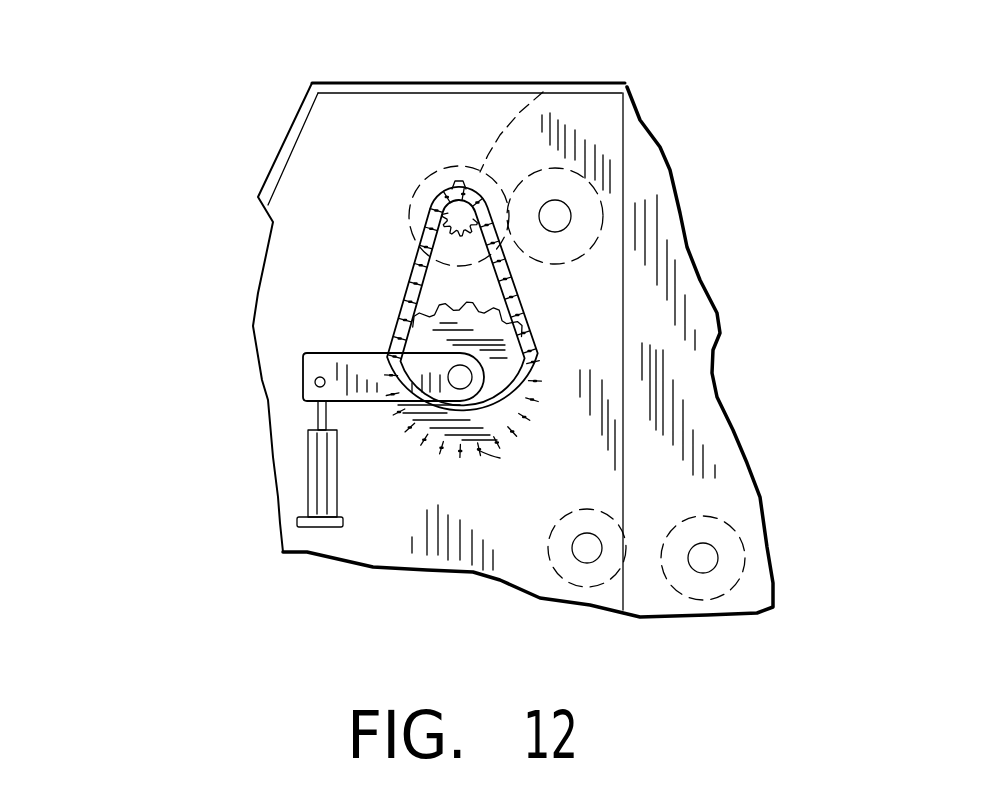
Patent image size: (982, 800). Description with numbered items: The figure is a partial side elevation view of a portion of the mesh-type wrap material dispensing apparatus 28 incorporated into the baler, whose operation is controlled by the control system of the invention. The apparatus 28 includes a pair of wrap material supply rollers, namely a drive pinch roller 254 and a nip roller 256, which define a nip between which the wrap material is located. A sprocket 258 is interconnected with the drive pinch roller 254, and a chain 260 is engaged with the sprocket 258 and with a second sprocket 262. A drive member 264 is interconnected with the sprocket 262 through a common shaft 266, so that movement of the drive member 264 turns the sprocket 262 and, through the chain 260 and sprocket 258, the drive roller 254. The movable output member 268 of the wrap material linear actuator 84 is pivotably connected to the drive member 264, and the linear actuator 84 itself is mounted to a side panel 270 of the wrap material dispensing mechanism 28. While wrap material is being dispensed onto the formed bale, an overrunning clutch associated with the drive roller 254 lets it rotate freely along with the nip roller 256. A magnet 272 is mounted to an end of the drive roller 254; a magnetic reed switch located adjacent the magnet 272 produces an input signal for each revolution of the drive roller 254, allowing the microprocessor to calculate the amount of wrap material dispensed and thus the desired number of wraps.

The wrap material dispensing apparatus 28 is at (110, 482).
The wrap material linear actuator 84 is at (337, 480).
The drive pinch roller 254 is at (543, 92).
The nip roller 256 is at (603, 197).
The sprocket 258 is at (440, 262).
The chain 260 is at (437, 195).
The sprocket 262 is at (490, 293).
The drive member 264 is at (330, 353).
The common shaft 266 is at (478, 450).
The movable output member 268 is at (318, 408).
The side panel 270 is at (280, 503).
The magnet 272 is at (457, 183).